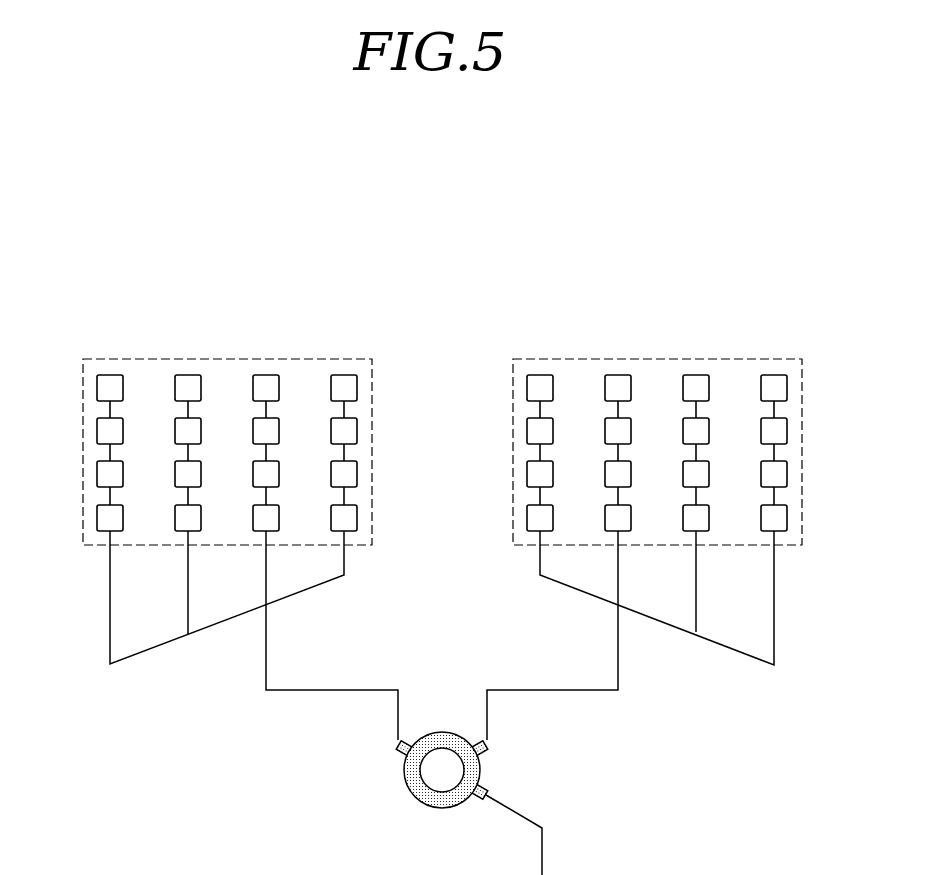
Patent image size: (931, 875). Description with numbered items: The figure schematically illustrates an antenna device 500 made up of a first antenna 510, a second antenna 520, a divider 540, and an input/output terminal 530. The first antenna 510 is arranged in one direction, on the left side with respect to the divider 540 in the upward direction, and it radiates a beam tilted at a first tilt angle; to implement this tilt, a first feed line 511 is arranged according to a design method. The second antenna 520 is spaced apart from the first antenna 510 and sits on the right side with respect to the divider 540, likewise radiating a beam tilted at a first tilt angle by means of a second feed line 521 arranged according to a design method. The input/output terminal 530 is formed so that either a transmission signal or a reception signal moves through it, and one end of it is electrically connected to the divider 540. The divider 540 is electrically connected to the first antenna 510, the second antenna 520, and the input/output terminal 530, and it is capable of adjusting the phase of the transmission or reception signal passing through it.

The antenna device 500 is at (120, 275).
The first antenna 510 is at (225, 358).
The first feed line 511 is at (158, 645).
The second antenna 520 is at (655, 358).
The second feed line 521 is at (725, 647).
The input/output terminal 530 is at (547, 852).
The divider 540 is at (410, 792).